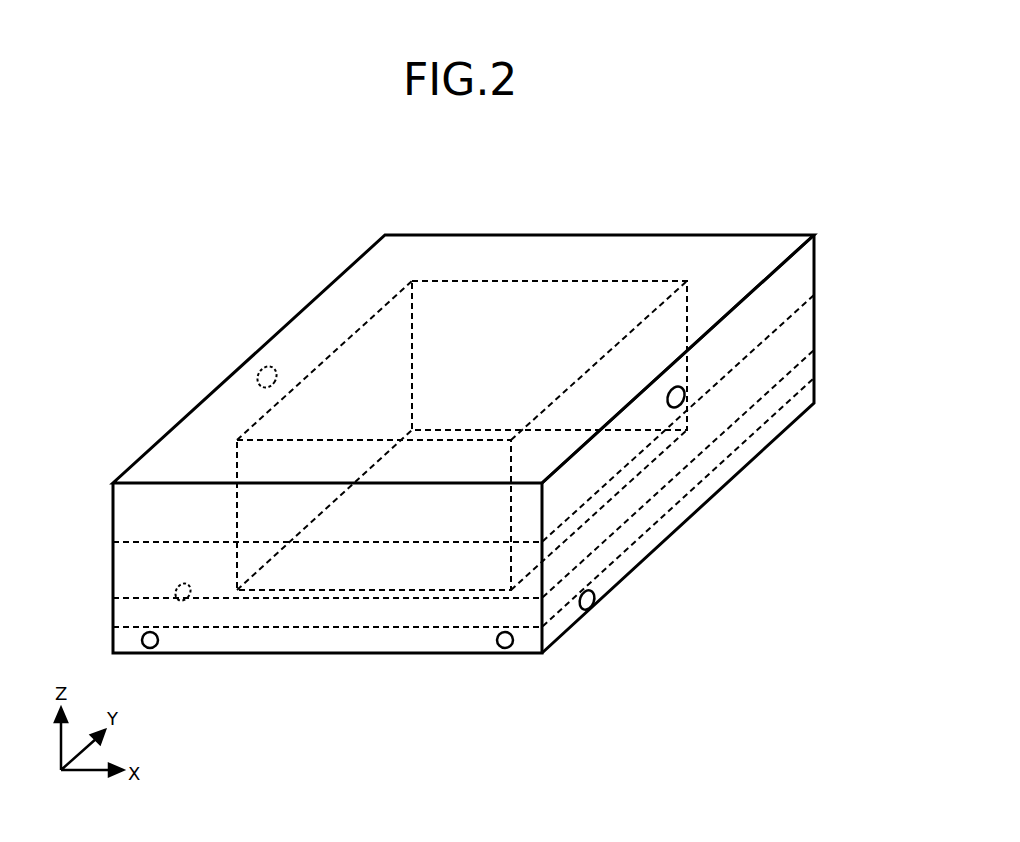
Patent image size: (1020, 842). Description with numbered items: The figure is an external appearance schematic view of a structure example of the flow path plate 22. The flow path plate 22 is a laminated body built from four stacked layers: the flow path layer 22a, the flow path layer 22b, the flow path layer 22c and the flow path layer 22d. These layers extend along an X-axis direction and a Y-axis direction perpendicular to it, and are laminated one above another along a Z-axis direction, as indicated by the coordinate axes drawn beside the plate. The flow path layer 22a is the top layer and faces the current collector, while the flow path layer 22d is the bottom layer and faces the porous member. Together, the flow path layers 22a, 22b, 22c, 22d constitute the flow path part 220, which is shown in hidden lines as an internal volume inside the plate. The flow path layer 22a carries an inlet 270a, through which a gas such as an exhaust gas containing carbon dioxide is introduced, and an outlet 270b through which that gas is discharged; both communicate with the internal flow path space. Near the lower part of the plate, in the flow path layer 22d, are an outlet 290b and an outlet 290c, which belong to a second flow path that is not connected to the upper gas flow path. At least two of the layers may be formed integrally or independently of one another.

The flow path plate 22 is at (122, 248).
The flow path layer 22a is at (805, 270).
The flow path layer 22b is at (805, 329).
The flow path layer 22c is at (805, 369).
The flow path layer 22d is at (805, 401).
The flow path part 220 is at (333, 350).
The inlet 270a is at (262, 373).
The outlet 270b is at (683, 406).
The outlet 290b is at (508, 648).
The outlet 290c is at (591, 610).